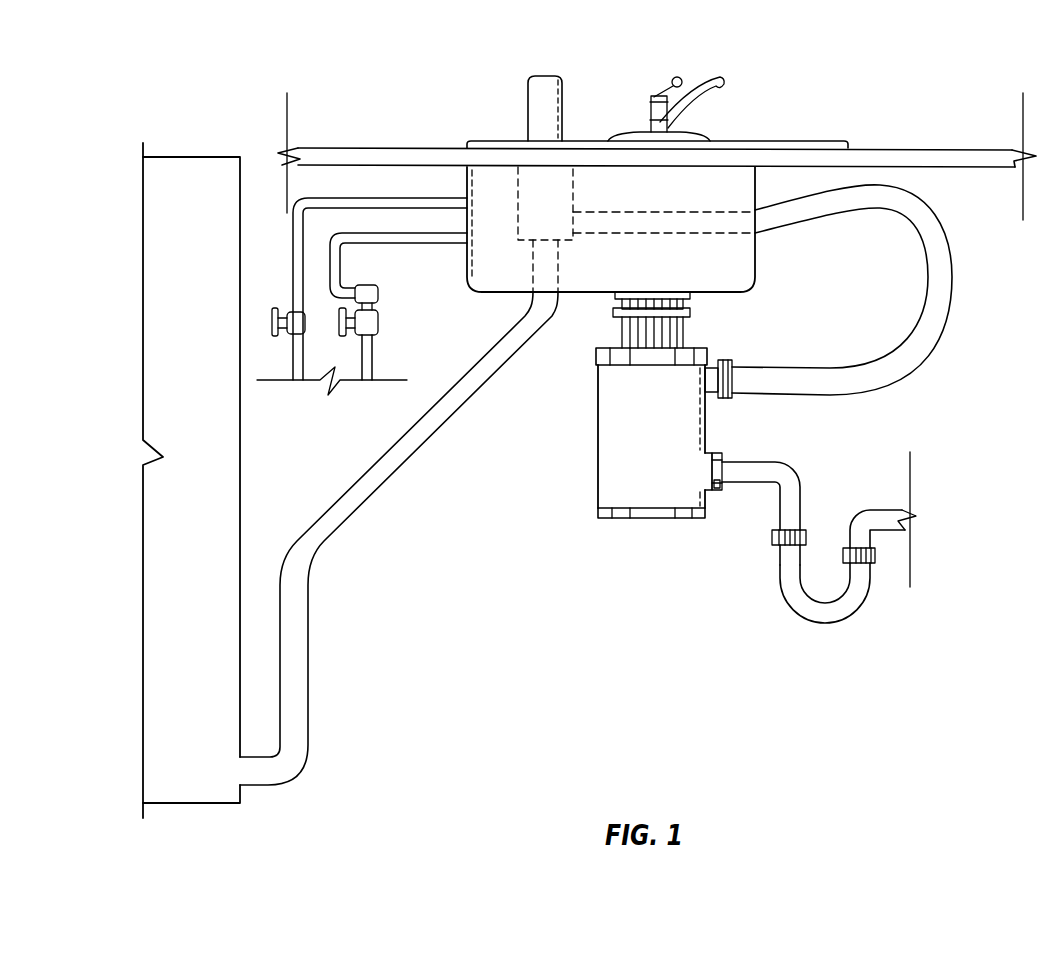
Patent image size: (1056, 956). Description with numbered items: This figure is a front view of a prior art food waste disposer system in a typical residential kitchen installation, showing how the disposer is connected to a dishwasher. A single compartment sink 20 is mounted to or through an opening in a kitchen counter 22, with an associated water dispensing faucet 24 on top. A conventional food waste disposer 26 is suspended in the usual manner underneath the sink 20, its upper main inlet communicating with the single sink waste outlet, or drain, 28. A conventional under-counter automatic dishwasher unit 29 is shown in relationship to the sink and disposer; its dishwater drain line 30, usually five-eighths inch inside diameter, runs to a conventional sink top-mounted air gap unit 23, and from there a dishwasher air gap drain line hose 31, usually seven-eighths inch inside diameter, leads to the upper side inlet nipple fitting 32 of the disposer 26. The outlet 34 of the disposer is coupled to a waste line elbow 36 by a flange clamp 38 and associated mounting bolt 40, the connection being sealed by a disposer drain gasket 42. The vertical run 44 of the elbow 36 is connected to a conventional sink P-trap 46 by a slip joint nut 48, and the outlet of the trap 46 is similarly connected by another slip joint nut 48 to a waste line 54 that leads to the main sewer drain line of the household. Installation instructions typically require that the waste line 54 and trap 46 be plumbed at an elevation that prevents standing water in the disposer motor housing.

The single compartment sink 20 is at (476, 285).
The kitchen counter 22 is at (343, 150).
The air gap unit 23 is at (549, 80).
The water dispensing faucet 24 is at (720, 77).
The food waste disposer 26 is at (590, 441).
The sink waste outlet 28 is at (654, 292).
The automatic dishwasher unit 29 is at (225, 475).
The dishwater drain line 30 is at (312, 572).
The dishwasher air gap drain line hose 31 is at (942, 283).
The upper side inlet nipple fitting 32 is at (714, 358).
The outlet 34 is at (712, 472).
The waste line elbow 36 is at (785, 463).
The flange clamp 38 is at (720, 492).
The mounting bolt 40 is at (722, 455).
The disposer drain gasket 42 is at (722, 488).
The vertical run 44 is at (792, 510).
The sink P-trap 46 is at (854, 621).
The slip joint nut 48 is at (772, 537).
The waste line 54 is at (931, 517).